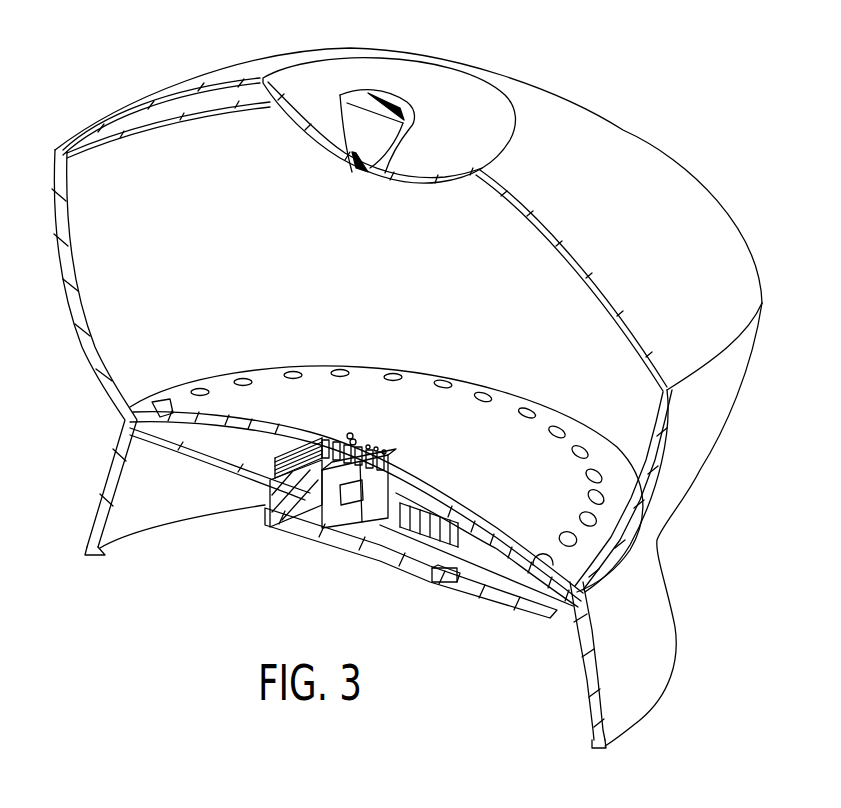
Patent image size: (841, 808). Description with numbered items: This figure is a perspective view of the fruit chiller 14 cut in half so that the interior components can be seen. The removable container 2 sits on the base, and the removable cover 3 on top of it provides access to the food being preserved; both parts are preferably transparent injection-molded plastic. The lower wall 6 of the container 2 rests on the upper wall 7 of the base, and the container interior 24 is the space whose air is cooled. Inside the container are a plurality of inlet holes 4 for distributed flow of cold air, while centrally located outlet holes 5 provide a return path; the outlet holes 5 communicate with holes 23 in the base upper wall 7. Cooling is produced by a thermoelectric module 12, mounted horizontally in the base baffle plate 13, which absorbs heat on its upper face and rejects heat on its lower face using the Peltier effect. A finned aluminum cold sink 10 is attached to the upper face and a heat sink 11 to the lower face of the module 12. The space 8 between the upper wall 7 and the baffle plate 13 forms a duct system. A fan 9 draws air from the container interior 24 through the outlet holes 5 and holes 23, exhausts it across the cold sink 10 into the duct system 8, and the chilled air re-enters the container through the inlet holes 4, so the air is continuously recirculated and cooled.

The removable container 2 is at (58, 203).
The removable cover 3 is at (593, 147).
The inlet holes 4 is at (200, 390).
The outlet holes 5 is at (373, 452).
The lower wall 6 is at (360, 402).
The upper wall 7 is at (518, 560).
The space 8 is at (218, 444).
The fan 9 is at (385, 495).
The cold sink 10 is at (405, 510).
The heat sink 11 is at (340, 543).
The thermoelectric module 12 is at (357, 492).
The base baffle plate 13 is at (238, 478).
The fruit chiller 14 is at (667, 207).
The holes 23 is at (390, 470).
The container interior 24 is at (373, 266).